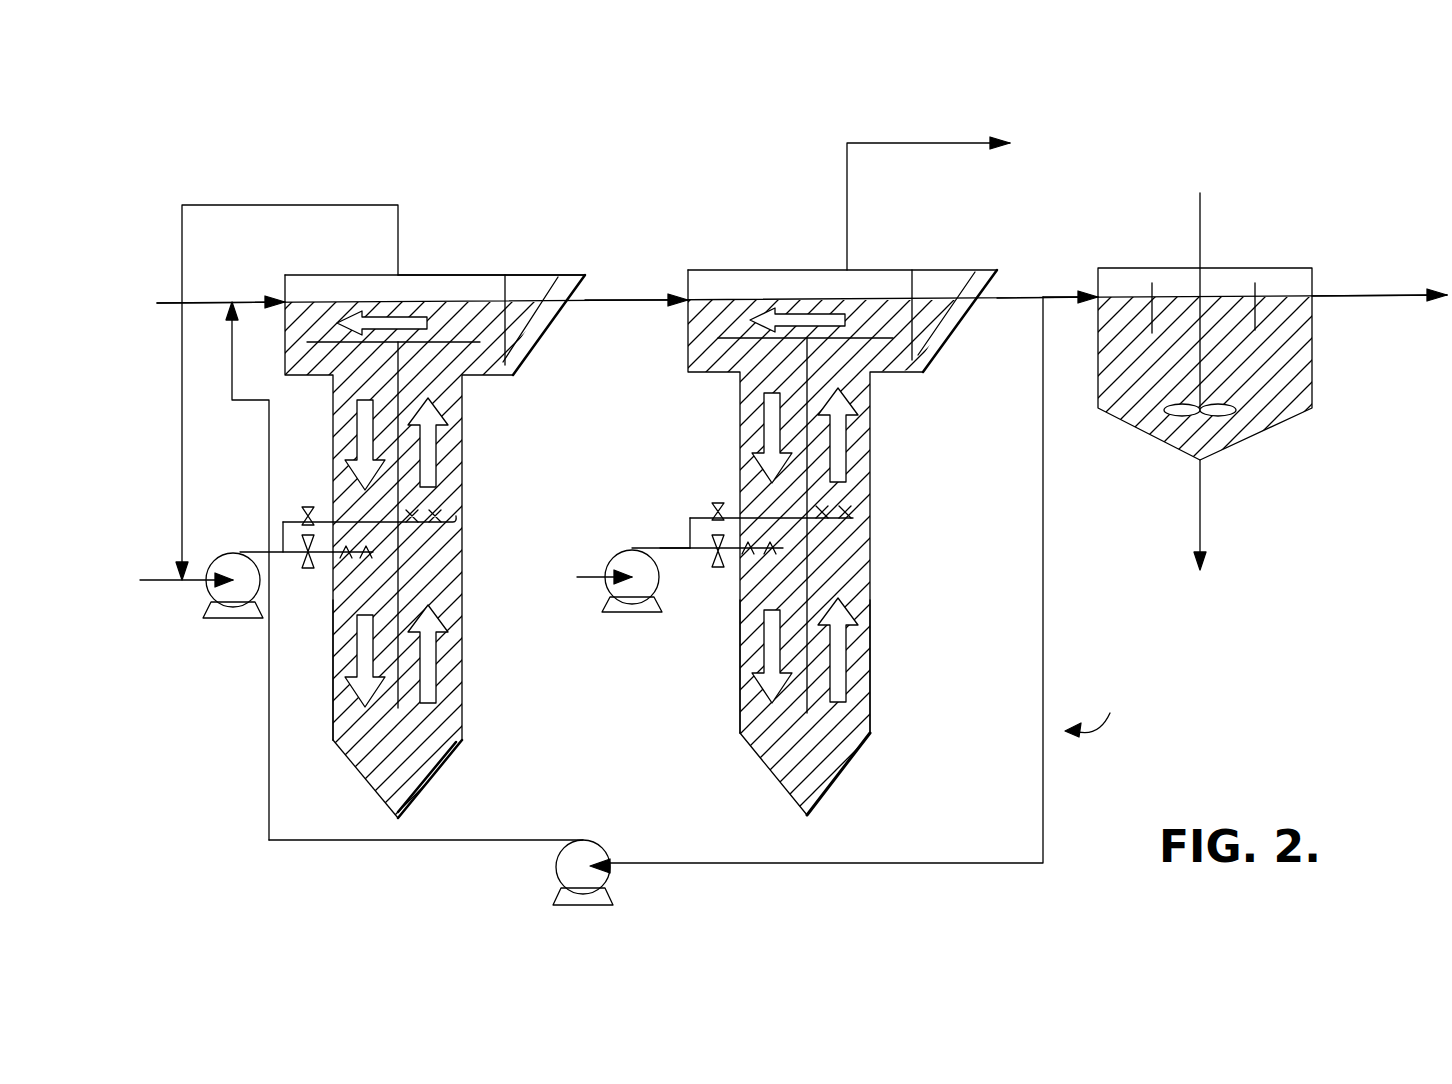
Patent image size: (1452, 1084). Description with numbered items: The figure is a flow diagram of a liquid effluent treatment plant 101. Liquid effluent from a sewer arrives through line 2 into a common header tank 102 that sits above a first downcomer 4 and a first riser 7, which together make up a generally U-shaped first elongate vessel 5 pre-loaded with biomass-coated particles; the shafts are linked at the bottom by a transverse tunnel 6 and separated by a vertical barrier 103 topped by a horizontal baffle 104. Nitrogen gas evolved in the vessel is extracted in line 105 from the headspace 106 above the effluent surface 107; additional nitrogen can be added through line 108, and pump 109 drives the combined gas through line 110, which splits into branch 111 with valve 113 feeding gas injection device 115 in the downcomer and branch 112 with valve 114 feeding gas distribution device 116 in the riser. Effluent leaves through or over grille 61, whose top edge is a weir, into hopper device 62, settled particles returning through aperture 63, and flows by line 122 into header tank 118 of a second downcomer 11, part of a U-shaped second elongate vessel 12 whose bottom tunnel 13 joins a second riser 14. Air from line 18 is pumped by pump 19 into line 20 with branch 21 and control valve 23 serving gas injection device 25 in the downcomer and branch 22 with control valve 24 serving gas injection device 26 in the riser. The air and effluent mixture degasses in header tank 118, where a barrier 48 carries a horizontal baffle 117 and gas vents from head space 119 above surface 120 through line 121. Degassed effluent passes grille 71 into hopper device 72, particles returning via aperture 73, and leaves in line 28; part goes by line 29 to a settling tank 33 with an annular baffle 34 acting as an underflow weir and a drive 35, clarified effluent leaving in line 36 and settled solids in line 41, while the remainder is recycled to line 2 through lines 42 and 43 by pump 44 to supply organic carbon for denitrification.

The line 2 is at (162, 300).
The line 105 is at (327, 203).
The headspace 106 is at (337, 287).
The surface 107 is at (417, 307).
The common header tank 102 is at (473, 270).
The grille 61 is at (555, 275).
The hopper device 62 is at (553, 323).
The aperture 63 is at (527, 360).
The horizontal baffle 104 is at (457, 343).
The gas distribution device 116 is at (461, 497).
The first riser 7 is at (437, 542).
The gas injection device 115 is at (372, 562).
The valve 114 is at (318, 507).
The branch 112 is at (292, 507).
The branch 111 is at (292, 560).
The valve 113 is at (322, 570).
The pump 109 is at (222, 556).
The line 110 is at (247, 550).
The line 108 is at (160, 582).
The first elongate vessel 5 is at (333, 668).
The first downcomer 4 is at (348, 720).
The transverse tunnel 6 is at (403, 787).
The vertical barrier 103 is at (440, 753).
The line 43 is at (358, 840).
The pump 44 is at (553, 872).
The line 42 is at (1043, 620).
The line 122 is at (630, 297).
The header tank 118 is at (720, 268).
The head space 119 is at (757, 287).
The surface 120 is at (823, 303).
The line 121 is at (937, 145).
The grille 71 is at (923, 303).
The hopper device 72 is at (977, 312).
The aperture 73 is at (940, 357).
The horizontal baffle 117 is at (897, 373).
The second riser 14 is at (845, 567).
The barrier 48 is at (810, 590).
The gas injection device 26 is at (848, 528).
The branch 21 is at (697, 552).
The branch 22 is at (690, 530).
The control valve 24 is at (718, 503).
The control valve 23 is at (717, 567).
The line 20 is at (663, 542).
The pump 19 is at (630, 552).
The line 18 is at (592, 572).
The gas injection device 25 is at (742, 635).
The second downcomer 11 is at (747, 667).
The second elongate vessel 12 is at (872, 670).
The transverse tunnel 13 is at (830, 757).
The line 28 is at (1013, 293).
The line 29 is at (1060, 293).
The settling tank 33 is at (1092, 388).
The drive 35 is at (1203, 232).
The annular baffle 34 is at (1267, 267).
The line 36 is at (1387, 293).
The line 41 is at (1202, 517).
The plant 101 is at (1098, 708).